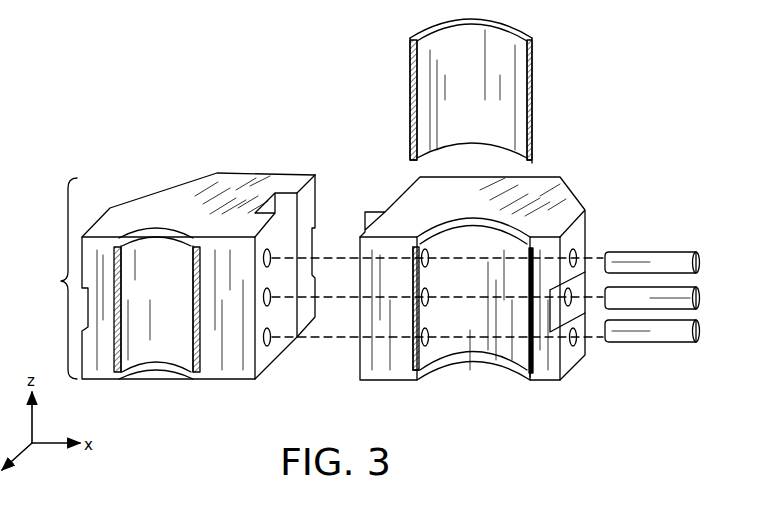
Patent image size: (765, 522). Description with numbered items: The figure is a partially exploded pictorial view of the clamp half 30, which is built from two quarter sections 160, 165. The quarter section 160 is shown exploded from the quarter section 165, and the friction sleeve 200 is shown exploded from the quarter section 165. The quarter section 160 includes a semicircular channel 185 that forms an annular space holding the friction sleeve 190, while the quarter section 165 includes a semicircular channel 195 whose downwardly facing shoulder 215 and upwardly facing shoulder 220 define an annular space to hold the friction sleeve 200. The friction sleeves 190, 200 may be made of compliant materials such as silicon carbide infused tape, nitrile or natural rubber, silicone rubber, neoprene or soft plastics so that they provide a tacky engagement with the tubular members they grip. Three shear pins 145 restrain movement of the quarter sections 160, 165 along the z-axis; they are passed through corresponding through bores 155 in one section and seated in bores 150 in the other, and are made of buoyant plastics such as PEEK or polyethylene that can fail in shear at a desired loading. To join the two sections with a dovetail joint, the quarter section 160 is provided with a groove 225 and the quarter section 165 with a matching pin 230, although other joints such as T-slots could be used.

The clamp half 30 is at (56, 278).
The shear pins 145 is at (703, 252).
The bores 150 is at (270, 350).
The through bores 155 is at (575, 249).
The quarter section 160 is at (224, 188).
The quarter section 165 is at (573, 203).
The semicircular channel 185 is at (138, 240).
The friction sleeve 190 is at (196, 374).
The semicircular channel 195 is at (468, 337).
The friction sleeve 200 is at (515, 90).
The downwardly facing shoulder 215 is at (415, 232).
The upwardly facing shoulder 220 is at (411, 374).
The groove 225 is at (283, 207).
The pin 230 is at (377, 204).